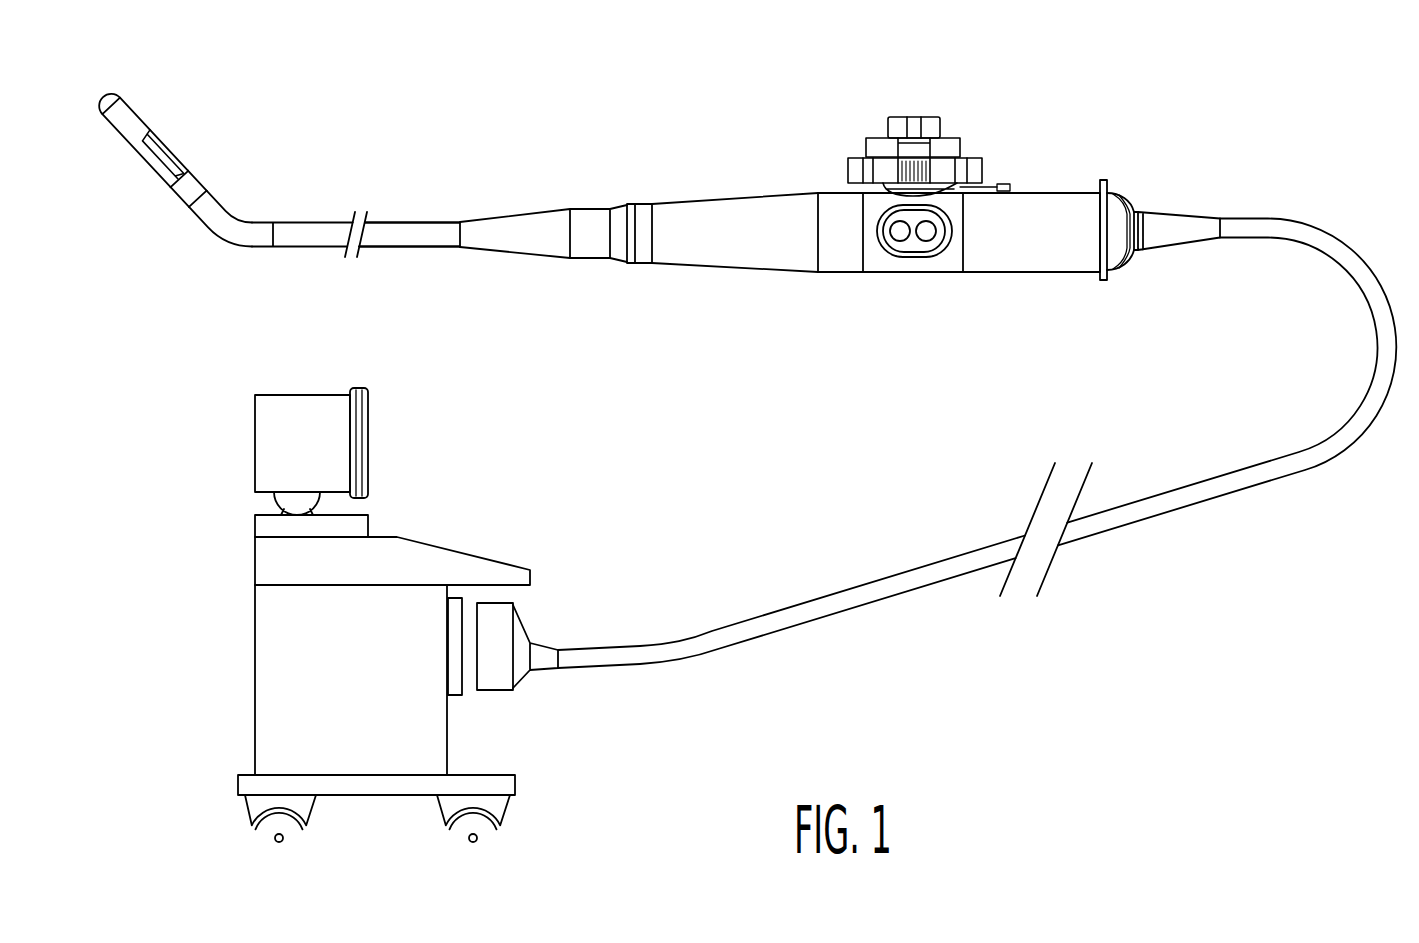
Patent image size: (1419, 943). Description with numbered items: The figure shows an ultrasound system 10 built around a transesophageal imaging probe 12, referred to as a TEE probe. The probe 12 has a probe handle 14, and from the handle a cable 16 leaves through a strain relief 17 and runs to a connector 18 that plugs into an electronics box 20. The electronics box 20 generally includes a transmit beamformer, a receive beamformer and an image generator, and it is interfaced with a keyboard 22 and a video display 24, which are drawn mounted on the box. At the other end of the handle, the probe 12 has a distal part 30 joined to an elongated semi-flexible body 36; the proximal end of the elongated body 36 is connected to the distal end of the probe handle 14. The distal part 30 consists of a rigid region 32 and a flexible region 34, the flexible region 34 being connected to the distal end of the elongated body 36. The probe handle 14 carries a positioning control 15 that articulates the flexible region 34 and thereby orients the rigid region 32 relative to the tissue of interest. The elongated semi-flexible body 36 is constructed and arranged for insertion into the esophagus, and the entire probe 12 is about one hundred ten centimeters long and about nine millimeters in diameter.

The ultrasound system 10 is at (1187, 690).
The transesophageal imaging probe 12 is at (128, 66).
The probe handle 14 is at (663, 52).
The positioning control 15 is at (935, 117).
The cable 16 is at (1173, 507).
The strain relief 17 is at (1145, 250).
The connector 18 is at (497, 692).
The electronics box 20 is at (337, 743).
The keyboard 22 is at (460, 552).
The video display 24 is at (370, 448).
The distal part 30 is at (78, 133).
The rigid region 32 is at (193, 178).
The flexible region 34 is at (224, 212).
The elongated semi-flexible body 36 is at (405, 237).